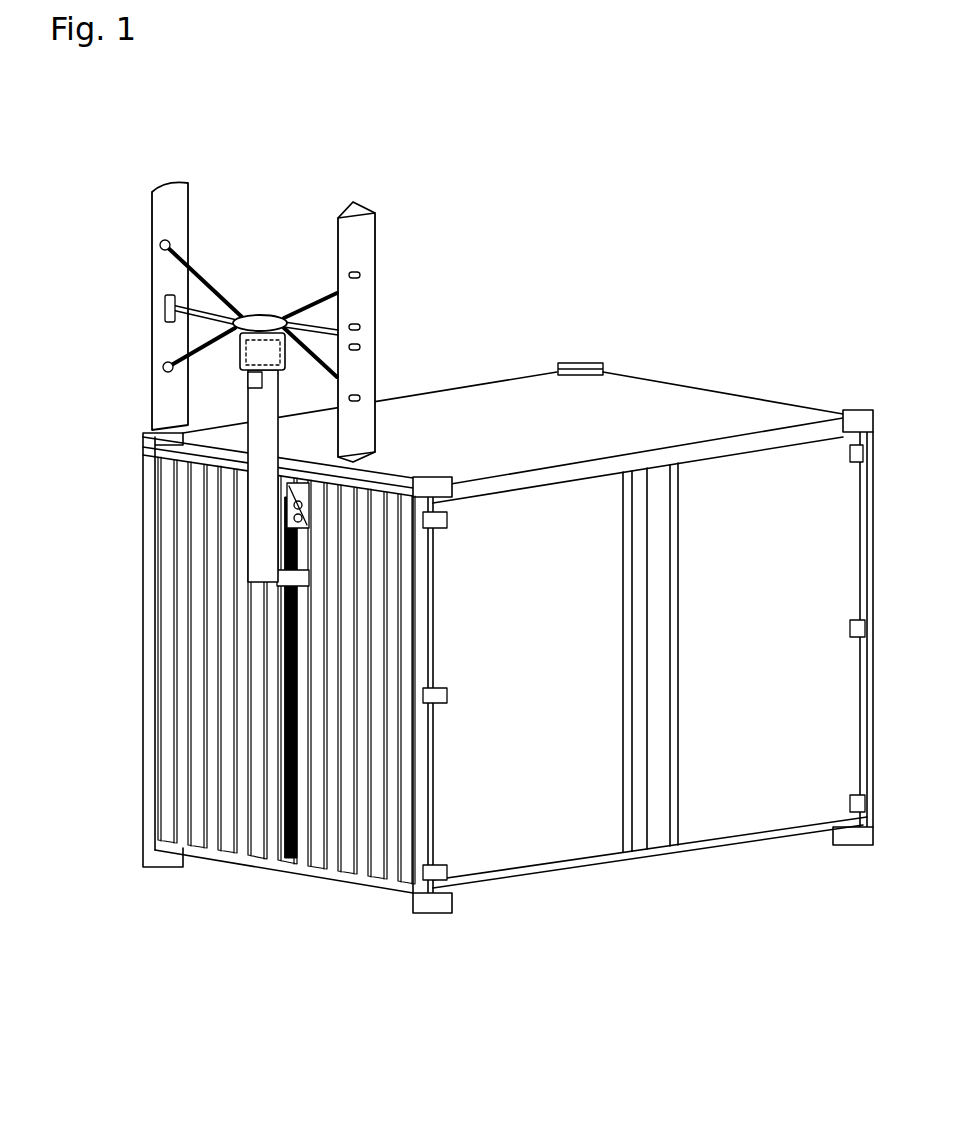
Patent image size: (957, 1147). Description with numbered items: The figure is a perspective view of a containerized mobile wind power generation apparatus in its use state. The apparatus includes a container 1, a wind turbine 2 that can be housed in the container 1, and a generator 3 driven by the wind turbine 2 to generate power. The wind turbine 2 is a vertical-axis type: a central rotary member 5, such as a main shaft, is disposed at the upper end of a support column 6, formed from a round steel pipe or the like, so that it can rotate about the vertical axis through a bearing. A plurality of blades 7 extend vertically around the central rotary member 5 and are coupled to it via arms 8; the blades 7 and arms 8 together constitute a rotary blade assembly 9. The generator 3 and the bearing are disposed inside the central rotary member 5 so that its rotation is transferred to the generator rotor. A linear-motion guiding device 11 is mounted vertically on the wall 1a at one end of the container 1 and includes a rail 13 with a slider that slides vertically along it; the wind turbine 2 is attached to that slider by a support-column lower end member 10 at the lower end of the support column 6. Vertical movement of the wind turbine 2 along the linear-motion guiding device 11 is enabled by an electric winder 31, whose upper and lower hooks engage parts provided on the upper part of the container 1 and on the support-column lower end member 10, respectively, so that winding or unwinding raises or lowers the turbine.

The container 1 is at (533, 398).
The wall 1a is at (242, 808).
The wind turbine 2 is at (130, 157).
The generator 3 is at (240, 360).
The central rotary member 5 is at (258, 317).
The support column 6 is at (260, 433).
The blades 7 is at (163, 223).
The arms 8 is at (178, 268).
The rotary blade assembly 9 is at (102, 214).
The support-column lower end member 10 is at (285, 580).
The linear-motion guiding device 11 is at (298, 785).
The rail 13 is at (297, 758).
The winder 31 is at (305, 512).